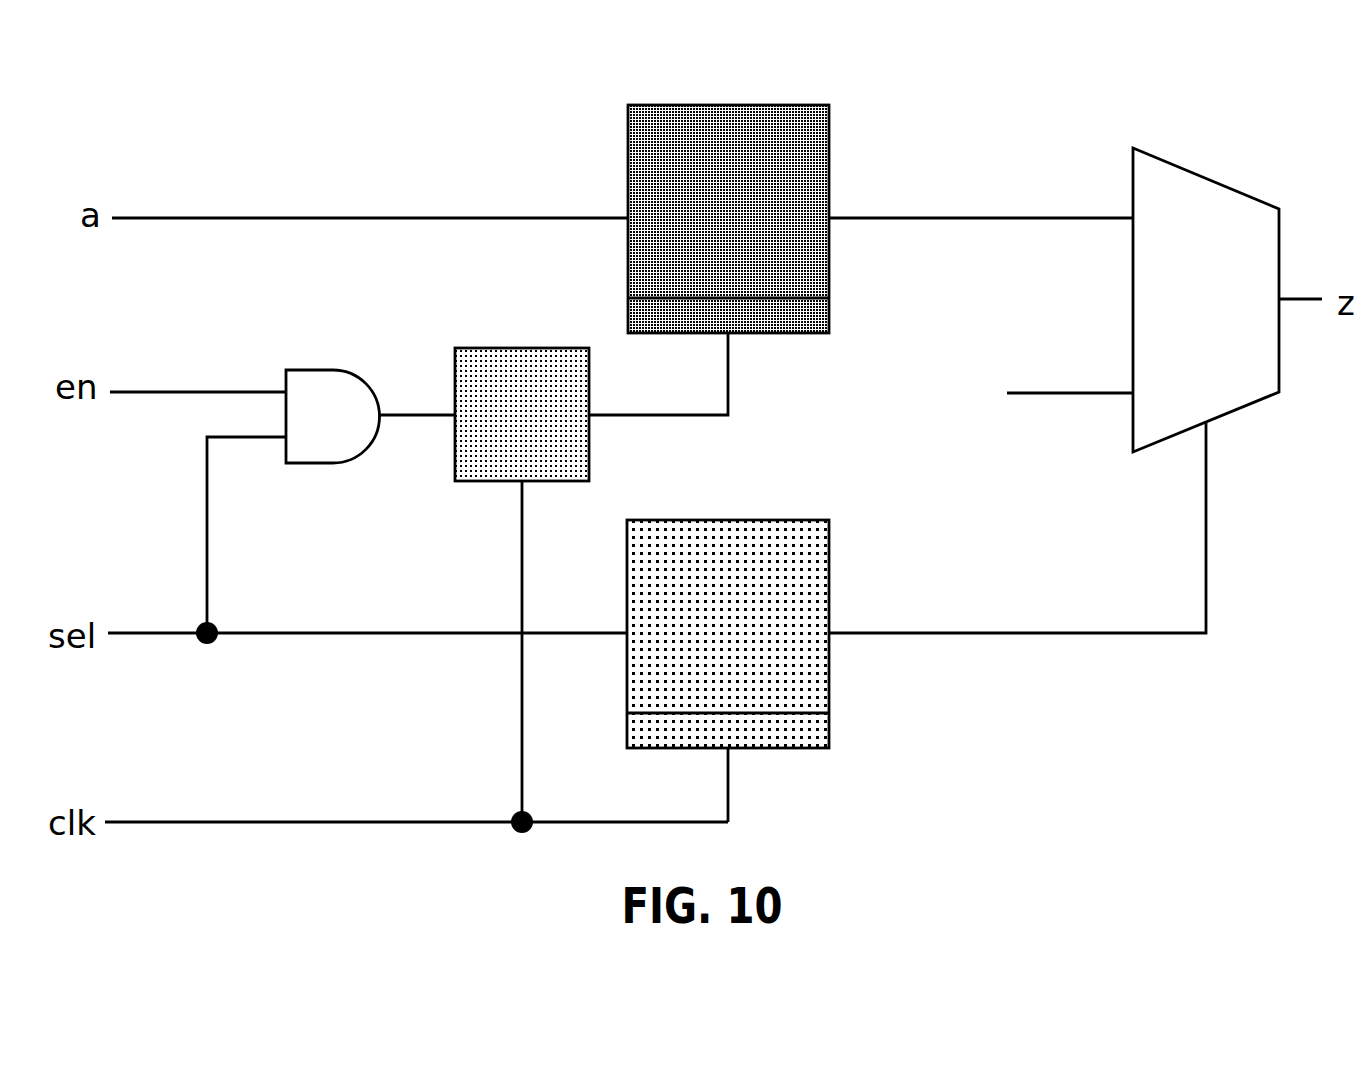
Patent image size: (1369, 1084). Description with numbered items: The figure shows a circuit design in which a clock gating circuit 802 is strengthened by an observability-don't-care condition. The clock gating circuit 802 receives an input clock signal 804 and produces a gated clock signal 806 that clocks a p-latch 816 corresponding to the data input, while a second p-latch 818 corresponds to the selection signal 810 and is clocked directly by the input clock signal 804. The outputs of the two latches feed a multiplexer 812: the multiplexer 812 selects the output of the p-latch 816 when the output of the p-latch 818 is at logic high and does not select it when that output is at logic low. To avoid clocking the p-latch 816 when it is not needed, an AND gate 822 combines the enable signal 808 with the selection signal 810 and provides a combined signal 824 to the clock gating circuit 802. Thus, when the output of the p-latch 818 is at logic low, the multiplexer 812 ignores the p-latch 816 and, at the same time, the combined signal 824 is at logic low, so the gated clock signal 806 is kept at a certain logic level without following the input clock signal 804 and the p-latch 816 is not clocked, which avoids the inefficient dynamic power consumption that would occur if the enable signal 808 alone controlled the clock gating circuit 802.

The clock gating circuit 802 is at (514, 374).
The input clock signal 804 is at (416, 657).
The gated clock signal 806 is at (669, 418).
The enable signal 808 is at (198, 351).
The selection signal 810 is at (360, 540).
The multiplexer 812 is at (1206, 270).
The p-latch 816 is at (690, 202).
The p-latch 818 is at (690, 620).
The AND gate 822 is at (311, 374).
The combined signal 824 is at (410, 374).